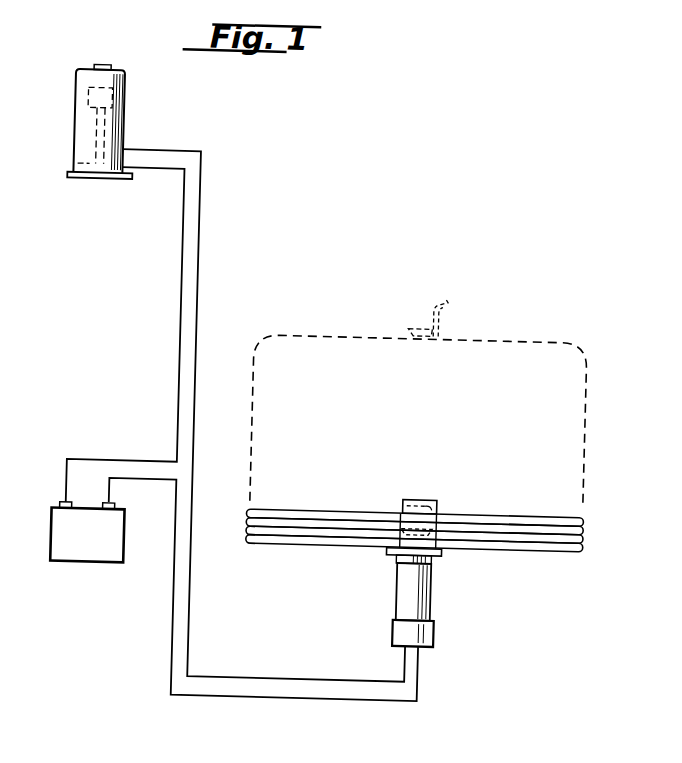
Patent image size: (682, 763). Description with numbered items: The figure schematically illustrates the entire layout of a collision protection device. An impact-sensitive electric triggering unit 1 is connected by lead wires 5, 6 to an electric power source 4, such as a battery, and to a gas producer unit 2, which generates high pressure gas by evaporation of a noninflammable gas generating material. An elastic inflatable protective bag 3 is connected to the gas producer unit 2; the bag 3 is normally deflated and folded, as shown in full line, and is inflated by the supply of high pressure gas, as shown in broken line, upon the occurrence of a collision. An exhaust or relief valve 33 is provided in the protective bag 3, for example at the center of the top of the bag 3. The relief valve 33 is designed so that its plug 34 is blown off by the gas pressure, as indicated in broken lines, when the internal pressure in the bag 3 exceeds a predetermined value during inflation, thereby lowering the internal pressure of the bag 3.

The impact-sensitive electric triggering unit 1 is at (105, 185).
The gas producer unit 2 is at (438, 604).
The elastic inflatable protective bag 3 is at (527, 545).
The electric power source 4 is at (105, 568).
The lead wire 5 is at (300, 679).
The lead wire 6 is at (301, 700).
The exhaust or relief valve 33 is at (406, 516).
The plug 34 is at (440, 500).